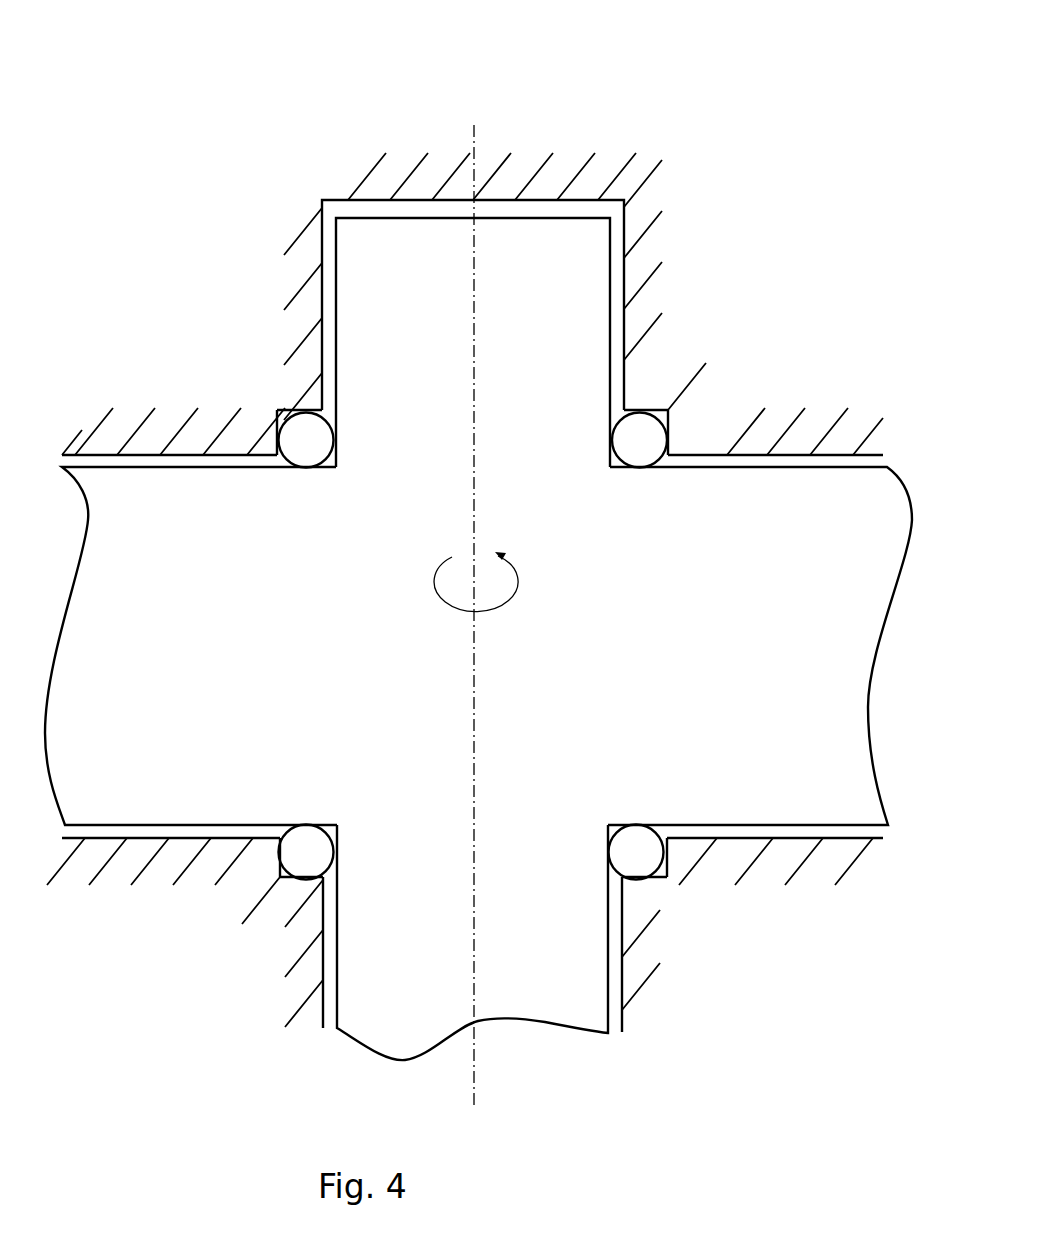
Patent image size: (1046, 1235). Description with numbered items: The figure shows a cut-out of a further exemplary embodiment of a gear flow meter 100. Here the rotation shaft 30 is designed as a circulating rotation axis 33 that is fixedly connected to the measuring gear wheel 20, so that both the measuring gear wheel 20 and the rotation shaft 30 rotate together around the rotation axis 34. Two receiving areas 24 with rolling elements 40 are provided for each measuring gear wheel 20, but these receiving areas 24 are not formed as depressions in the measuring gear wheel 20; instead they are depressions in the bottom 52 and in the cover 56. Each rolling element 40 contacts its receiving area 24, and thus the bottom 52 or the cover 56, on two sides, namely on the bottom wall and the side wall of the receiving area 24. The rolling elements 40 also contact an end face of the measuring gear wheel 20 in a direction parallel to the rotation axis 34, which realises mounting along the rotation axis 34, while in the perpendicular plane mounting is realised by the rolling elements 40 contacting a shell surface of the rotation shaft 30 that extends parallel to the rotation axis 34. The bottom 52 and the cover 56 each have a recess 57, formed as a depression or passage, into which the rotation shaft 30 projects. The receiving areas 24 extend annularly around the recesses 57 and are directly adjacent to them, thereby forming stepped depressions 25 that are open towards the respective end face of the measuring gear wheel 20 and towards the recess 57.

The gear flow meter 100 is at (707, 60).
The measuring gear wheel 20 is at (178, 657).
The rotation shaft 30 is at (425, 333).
The circulating rotation axis 33 is at (563, 923).
The rotation axis 34 is at (474, 702).
The cover 56 is at (140, 317).
The bottom 52 is at (168, 993).
The receiving area 24 is at (276, 411).
The stepped depression 25 is at (273, 419).
The rolling element 40 is at (306, 441).
The recess 57 is at (521, 208).